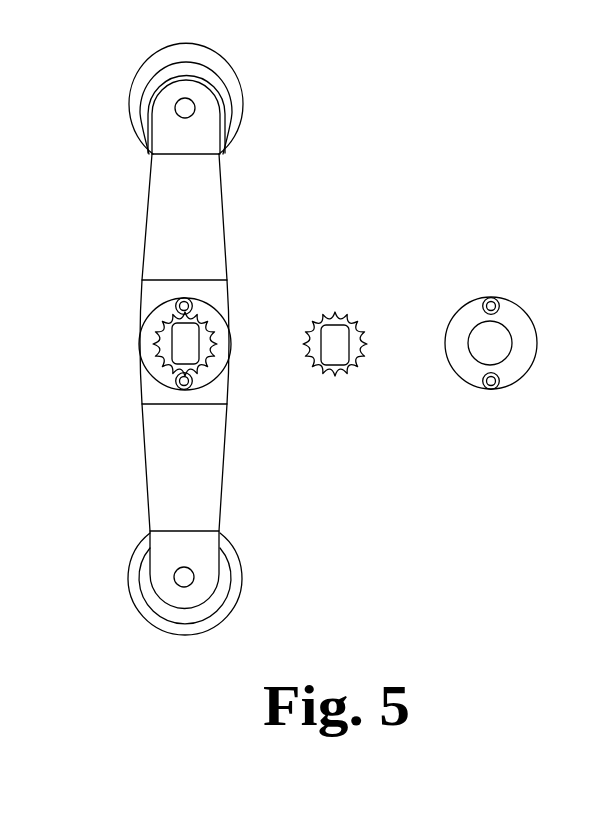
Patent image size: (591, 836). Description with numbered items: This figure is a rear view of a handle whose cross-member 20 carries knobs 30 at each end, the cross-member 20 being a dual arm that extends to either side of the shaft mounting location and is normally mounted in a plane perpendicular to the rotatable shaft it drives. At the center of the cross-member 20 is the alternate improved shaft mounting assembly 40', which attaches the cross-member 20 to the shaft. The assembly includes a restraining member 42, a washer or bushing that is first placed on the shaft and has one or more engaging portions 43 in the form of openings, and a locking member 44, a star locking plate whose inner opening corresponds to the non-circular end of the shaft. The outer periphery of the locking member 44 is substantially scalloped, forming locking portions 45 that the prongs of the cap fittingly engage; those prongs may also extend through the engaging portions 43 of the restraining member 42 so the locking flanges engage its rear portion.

The cross-member 20 is at (157, 474).
The knobs 30 is at (237, 136).
The shaft mounting assembly 40' is at (436, 163).
The restraining member 42 is at (218, 317).
The engaging portions 43 is at (179, 304).
The locking member 44 is at (207, 352).
The locking portions 45 is at (313, 324).